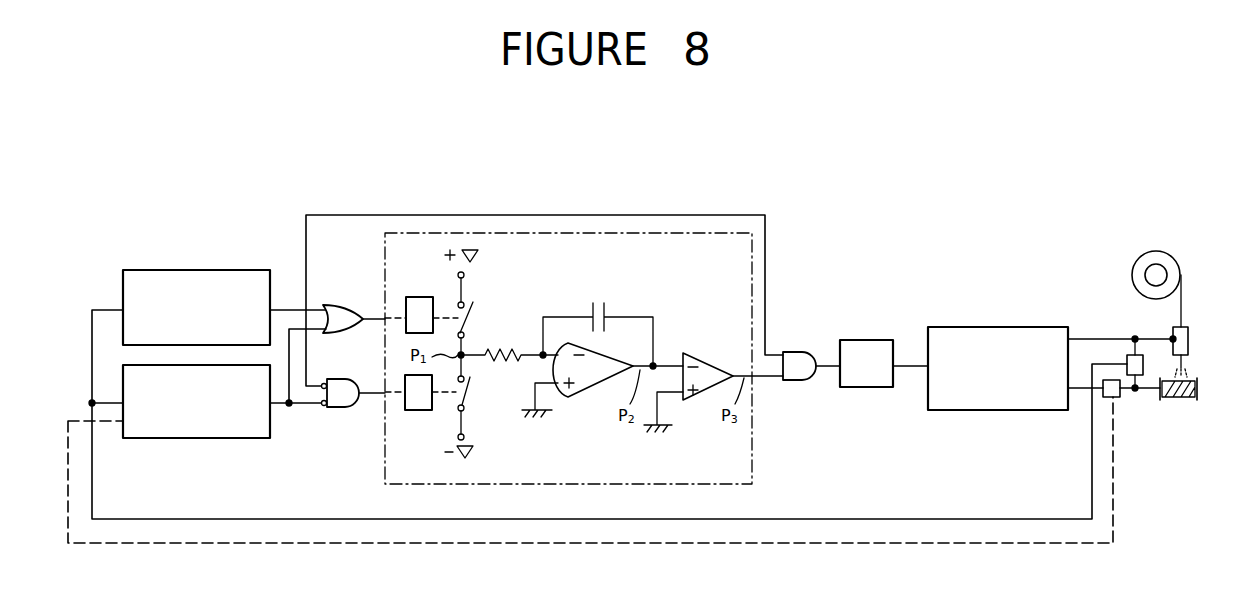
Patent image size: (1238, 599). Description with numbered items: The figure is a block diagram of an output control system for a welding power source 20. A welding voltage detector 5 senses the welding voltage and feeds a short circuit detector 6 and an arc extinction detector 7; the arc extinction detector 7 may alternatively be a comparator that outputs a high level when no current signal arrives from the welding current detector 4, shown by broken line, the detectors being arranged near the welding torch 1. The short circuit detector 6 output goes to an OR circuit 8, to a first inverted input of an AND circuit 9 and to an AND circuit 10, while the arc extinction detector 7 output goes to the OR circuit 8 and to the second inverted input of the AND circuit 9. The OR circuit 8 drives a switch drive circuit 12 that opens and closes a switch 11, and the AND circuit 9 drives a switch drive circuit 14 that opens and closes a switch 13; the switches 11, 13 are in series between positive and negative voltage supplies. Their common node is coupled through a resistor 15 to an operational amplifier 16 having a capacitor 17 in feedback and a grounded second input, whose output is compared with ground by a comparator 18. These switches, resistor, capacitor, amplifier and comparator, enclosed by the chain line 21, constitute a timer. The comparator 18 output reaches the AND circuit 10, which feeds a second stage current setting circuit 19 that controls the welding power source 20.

The welding torch contact tip 1 is at (1183, 325).
The welding current detector 4 is at (1194, 372).
The welding voltage detector 5 is at (1145, 354).
The short circuit detector 6 is at (213, 270).
The arc extinction detector 7 is at (197, 438).
The OR circuit 8 is at (344, 305).
The AND circuit 9 is at (343, 407).
The AND circuit 10 is at (800, 352).
The switch 11 is at (471, 318).
The switch drive circuit 12 is at (420, 297).
The switch 13 is at (468, 386).
The switch drive circuit 14 is at (420, 410).
The resistor 15 is at (500, 348).
The operational amplifier 16 is at (592, 378).
The capacitor 17 is at (593, 310).
The comparator 18 is at (703, 358).
The second stage current setting circuit 19 is at (863, 340).
The welding power source 20 is at (955, 327).
The control circuit block 21 is at (528, 233).